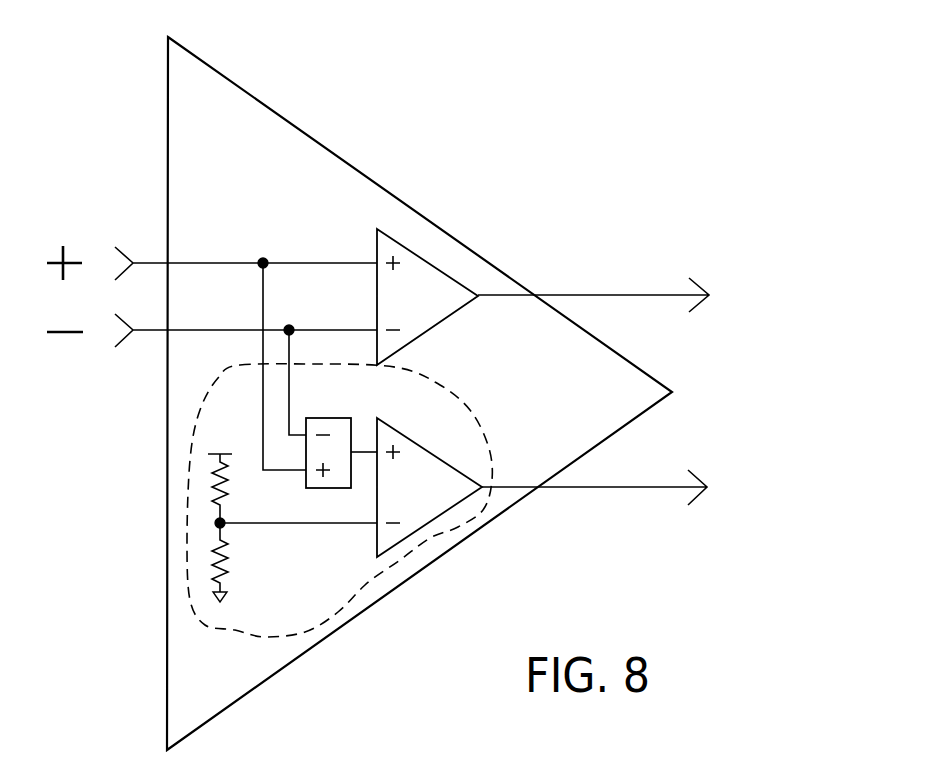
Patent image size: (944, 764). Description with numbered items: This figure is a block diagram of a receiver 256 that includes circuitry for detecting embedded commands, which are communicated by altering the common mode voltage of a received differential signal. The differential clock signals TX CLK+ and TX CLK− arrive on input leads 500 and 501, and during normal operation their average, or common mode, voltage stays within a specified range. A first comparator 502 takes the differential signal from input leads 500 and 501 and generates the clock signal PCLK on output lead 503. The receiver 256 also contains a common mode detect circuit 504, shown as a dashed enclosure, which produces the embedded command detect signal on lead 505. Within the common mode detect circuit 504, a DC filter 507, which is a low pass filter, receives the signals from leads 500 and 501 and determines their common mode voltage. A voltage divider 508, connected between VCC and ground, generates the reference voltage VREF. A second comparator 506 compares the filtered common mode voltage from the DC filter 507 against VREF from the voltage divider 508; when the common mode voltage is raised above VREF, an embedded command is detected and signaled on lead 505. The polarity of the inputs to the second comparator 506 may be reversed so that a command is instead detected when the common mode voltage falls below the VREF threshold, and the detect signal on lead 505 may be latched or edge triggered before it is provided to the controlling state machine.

The receiver 256 is at (480, 165).
The input lead 500 is at (148, 262).
The input lead 501 is at (148, 329).
The first comparator 502 is at (446, 319).
The output lead 503 is at (541, 294).
The common mode detect circuit 504 is at (434, 385).
The lead 505 is at (539, 489).
The second comparator 506 is at (424, 448).
The DC filter 507 is at (325, 412).
The voltage divider 508 is at (200, 570).